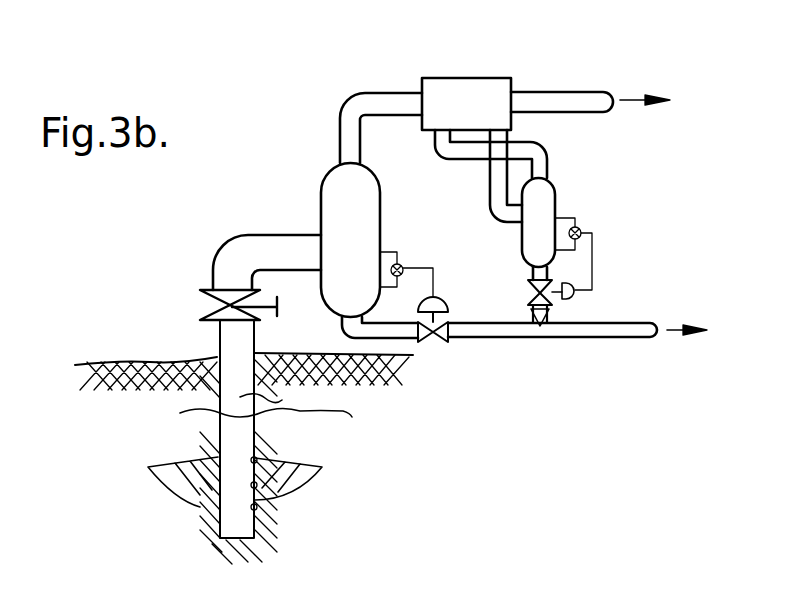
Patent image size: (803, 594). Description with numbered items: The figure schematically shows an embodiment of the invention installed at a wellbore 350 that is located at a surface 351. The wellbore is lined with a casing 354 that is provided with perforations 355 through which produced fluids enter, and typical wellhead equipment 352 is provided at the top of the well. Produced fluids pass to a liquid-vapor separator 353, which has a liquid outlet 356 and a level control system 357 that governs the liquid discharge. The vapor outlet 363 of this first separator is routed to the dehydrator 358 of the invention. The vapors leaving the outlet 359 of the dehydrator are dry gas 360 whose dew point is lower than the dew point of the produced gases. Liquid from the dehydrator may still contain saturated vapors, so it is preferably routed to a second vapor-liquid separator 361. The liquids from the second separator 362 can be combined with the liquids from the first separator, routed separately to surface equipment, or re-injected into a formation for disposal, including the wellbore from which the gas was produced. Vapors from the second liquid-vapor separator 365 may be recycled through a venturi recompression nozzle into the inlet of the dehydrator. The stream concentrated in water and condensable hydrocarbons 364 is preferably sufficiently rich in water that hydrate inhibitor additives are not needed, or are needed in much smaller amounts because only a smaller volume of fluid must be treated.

The wellbore 350 is at (230, 348).
The surface 351 is at (128, 362).
The wellhead equipment 352 is at (210, 312).
The liquid-vapor separator 353 is at (361, 250).
The casing 354 is at (288, 411).
The perforations 355 is at (242, 481).
The liquid outlet 356 is at (405, 340).
The level control system 357 is at (418, 266).
The dehydrator 358 is at (487, 117).
The outlet 359 is at (556, 92).
The dry gas 360 is at (630, 100).
The second vapor-liquid separator 361 is at (557, 197).
The liquids from the second separator 362 is at (550, 312).
The vapor outlet 363 is at (350, 108).
The stream concentrated in water and condensable hydrocarbons 364 is at (440, 150).
The vapors from the second liquid-vapor separator 365 is at (530, 152).